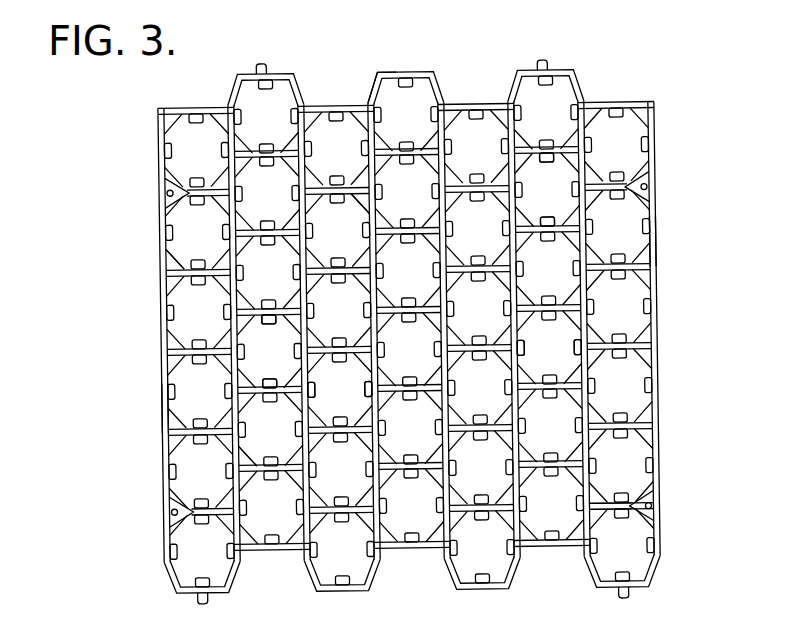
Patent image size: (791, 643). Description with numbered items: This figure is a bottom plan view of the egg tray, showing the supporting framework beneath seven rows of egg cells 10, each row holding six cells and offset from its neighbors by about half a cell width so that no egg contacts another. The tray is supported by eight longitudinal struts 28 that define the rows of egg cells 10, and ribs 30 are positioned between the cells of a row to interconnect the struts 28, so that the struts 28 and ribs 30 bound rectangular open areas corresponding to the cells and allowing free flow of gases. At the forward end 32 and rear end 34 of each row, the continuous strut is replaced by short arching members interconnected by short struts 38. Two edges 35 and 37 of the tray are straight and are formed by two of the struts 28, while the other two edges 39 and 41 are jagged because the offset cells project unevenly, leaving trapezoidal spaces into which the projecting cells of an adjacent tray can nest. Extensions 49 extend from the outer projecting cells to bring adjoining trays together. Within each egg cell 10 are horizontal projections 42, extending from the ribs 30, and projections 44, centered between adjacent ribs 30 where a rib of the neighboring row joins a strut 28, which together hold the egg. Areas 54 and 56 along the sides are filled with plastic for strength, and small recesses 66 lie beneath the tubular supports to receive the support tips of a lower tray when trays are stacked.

The egg cell 10 is at (275, 93).
The longitudinal strut 28 is at (508, 214).
The rib 30 is at (353, 198).
The forward end 32 is at (427, 588).
The rear end 34 is at (493, 80).
The straight edge 35 is at (163, 405).
The straight edge 37 is at (657, 247).
The short strut 38 is at (421, 72).
The jagged edge 39 is at (357, 592).
The jagged edge 41 is at (380, 73).
The projection 42 is at (545, 222).
The projection 44 is at (366, 387).
The extension 49 is at (263, 64).
The area 54 is at (653, 352).
The area 56 is at (165, 262).
The recess 66 is at (164, 190).